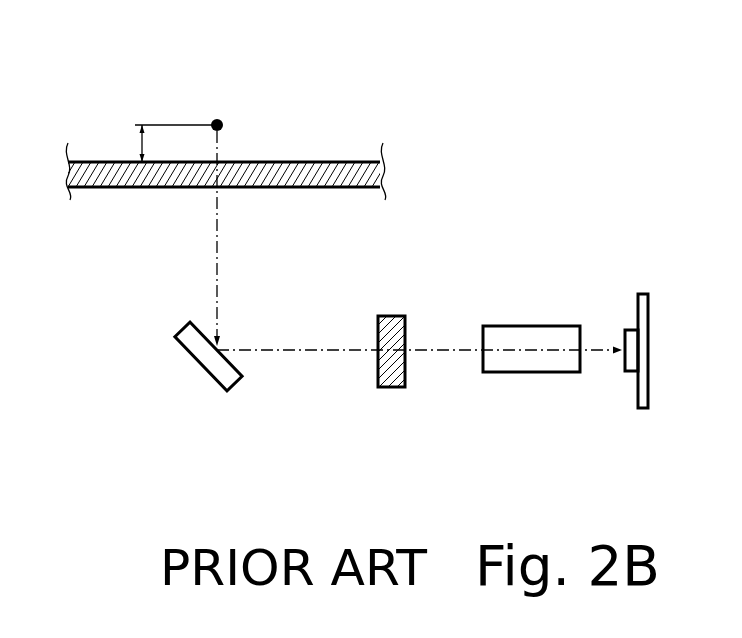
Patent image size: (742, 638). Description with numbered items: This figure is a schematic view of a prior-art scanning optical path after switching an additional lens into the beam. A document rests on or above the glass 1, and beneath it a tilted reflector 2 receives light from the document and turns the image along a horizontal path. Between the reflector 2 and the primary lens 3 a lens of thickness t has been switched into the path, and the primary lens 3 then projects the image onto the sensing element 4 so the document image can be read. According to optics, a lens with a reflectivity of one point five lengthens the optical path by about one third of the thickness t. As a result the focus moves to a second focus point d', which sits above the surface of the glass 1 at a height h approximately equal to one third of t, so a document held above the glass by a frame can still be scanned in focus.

The glass 1 is at (312, 163).
The second focus point d' is at (243, 84).
The height h is at (162, 143).
The reflector 2 is at (208, 358).
The lens thickness t is at (390, 375).
The primary lens 3 is at (537, 360).
The sensing element 4 is at (645, 367).